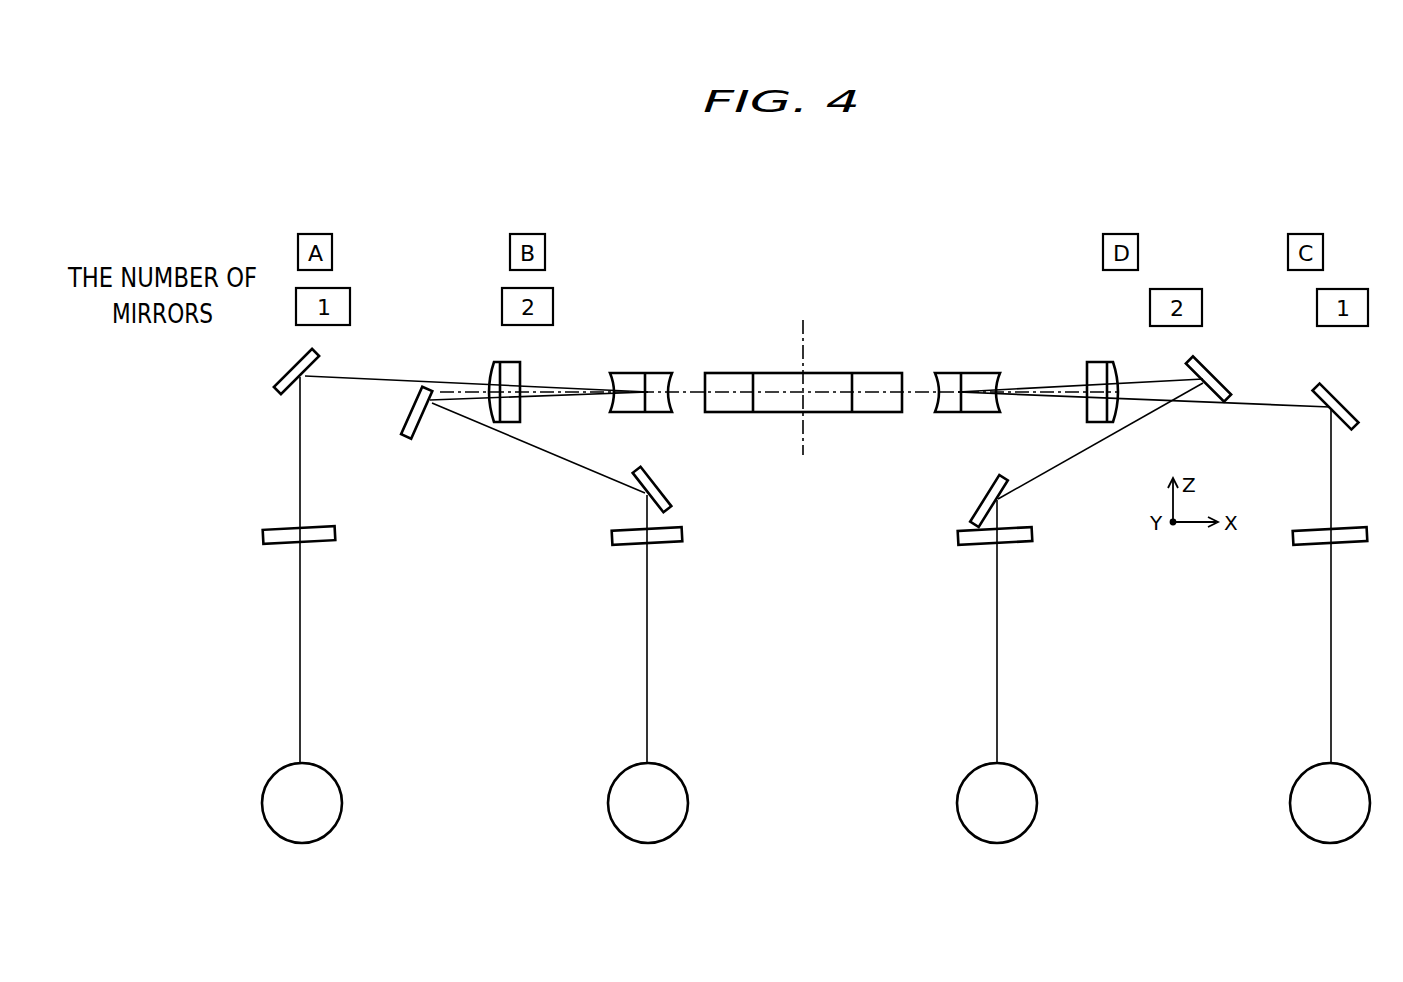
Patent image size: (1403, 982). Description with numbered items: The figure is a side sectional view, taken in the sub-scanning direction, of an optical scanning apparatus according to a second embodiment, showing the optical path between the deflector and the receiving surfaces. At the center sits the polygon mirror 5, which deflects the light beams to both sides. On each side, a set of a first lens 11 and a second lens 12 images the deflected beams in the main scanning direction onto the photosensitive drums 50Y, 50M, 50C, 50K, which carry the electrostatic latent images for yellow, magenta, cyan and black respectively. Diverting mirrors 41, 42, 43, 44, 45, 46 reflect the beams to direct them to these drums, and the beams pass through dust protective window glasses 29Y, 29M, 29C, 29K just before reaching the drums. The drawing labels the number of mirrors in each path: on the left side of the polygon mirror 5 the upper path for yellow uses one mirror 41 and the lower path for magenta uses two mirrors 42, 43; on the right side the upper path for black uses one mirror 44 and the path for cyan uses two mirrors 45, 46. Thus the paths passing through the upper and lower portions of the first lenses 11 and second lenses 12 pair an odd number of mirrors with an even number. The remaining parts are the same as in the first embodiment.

The polygon mirror 5 is at (879, 372).
The first lens 11 is at (632, 372).
The second lens 12 is at (520, 373).
The diverting mirror 41 is at (318, 356).
The diverting mirror 42 is at (417, 428).
The diverting mirror 43 is at (652, 482).
The diverting mirror 44 is at (1332, 392).
The diverting mirror 45 is at (1208, 367).
The diverting mirror 46 is at (988, 490).
The dust protective window glass 29Y is at (318, 543).
The dust protective window glass 29M is at (665, 544).
The dust protective window glass 29C is at (1010, 545).
The dust protective window glass 29K is at (1310, 546).
The photosensitive drum 50Y is at (337, 788).
The photosensitive drum 50M is at (680, 782).
The photosensitive drum 50C is at (1020, 767).
The photosensitive drum 50K is at (1292, 790).